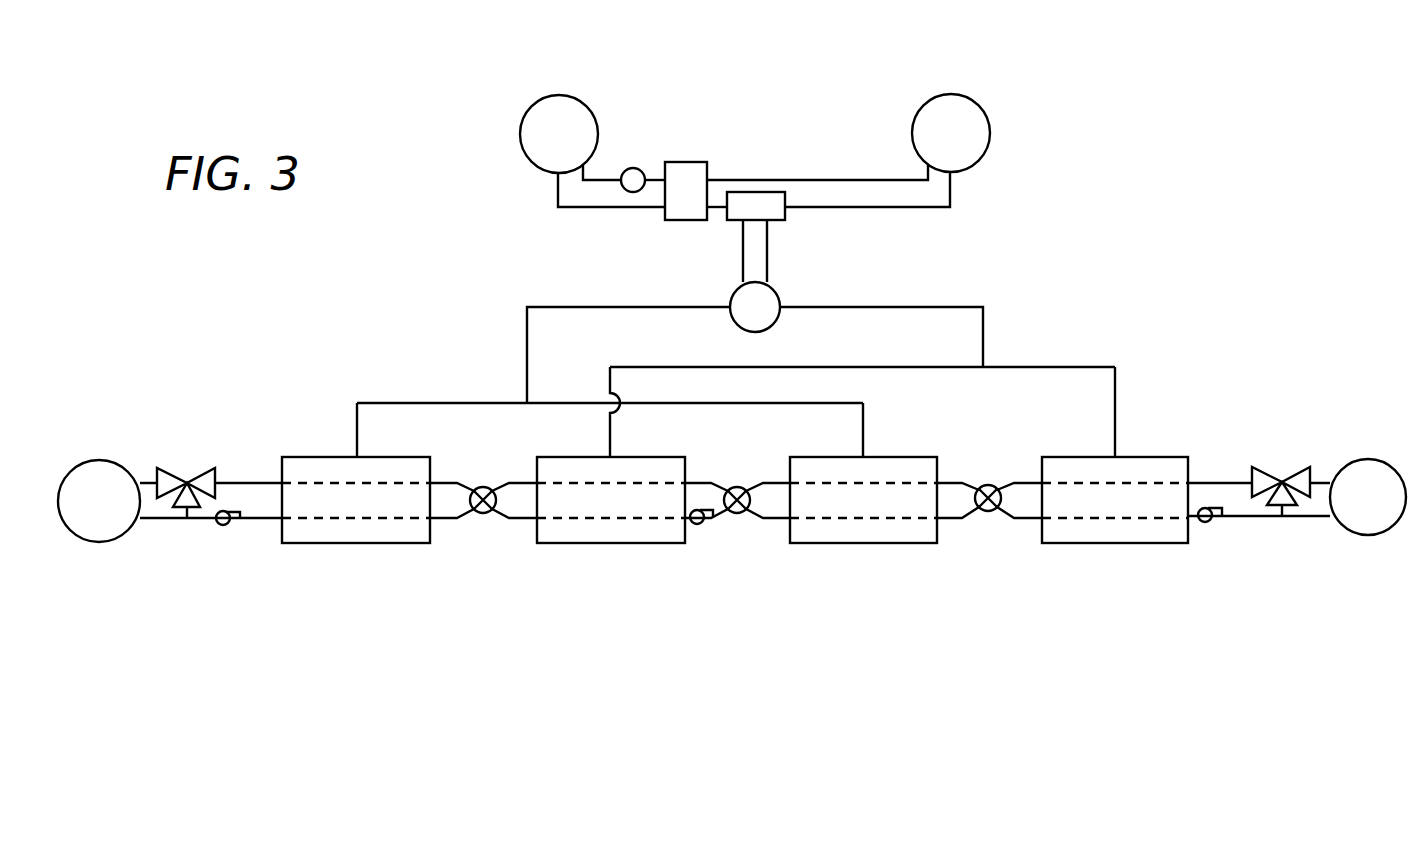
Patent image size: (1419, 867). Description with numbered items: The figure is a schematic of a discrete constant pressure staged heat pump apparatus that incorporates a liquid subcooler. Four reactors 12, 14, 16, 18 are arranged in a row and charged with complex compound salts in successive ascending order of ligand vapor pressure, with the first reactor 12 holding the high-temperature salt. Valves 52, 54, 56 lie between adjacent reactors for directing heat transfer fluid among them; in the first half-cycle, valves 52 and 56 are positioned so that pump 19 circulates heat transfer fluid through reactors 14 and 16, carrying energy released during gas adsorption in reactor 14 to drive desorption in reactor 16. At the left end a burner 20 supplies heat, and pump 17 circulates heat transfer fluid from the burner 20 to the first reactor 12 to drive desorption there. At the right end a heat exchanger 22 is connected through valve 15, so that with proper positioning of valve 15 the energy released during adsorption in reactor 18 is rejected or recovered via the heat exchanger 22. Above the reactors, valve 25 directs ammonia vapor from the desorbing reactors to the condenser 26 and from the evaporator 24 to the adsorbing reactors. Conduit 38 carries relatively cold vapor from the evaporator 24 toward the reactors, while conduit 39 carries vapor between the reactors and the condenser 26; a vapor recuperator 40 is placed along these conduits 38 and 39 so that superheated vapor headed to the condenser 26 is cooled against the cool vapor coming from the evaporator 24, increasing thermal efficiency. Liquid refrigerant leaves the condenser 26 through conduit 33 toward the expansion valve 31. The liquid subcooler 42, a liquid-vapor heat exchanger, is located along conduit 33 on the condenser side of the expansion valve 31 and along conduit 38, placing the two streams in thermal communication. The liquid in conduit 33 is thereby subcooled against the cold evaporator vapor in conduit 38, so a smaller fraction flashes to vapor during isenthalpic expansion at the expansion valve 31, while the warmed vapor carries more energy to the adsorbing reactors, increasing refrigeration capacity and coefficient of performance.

The first reactor 12 is at (347, 543).
The reactor 14 is at (606, 543).
The valve 15 is at (1285, 480).
The reactor 16 is at (897, 457).
The pump 17 is at (221, 526).
The reactor 18 is at (1148, 457).
The pump 19 is at (702, 526).
The burner 20 is at (100, 462).
The heat exchanger 22 is at (1362, 535).
The evaporator 24 is at (587, 106).
The valve 25 is at (731, 303).
The condenser 26 is at (979, 105).
The expansion valve 31 is at (641, 170).
The conduit 33 is at (822, 180).
The conduit 38 is at (598, 207).
The conduit 39 is at (918, 207).
The vapor recuperator 40 is at (790, 220).
The liquid subcooler 42 is at (690, 162).
The valve 52 is at (490, 489).
The valve 54 is at (745, 490).
The valve 56 is at (996, 488).